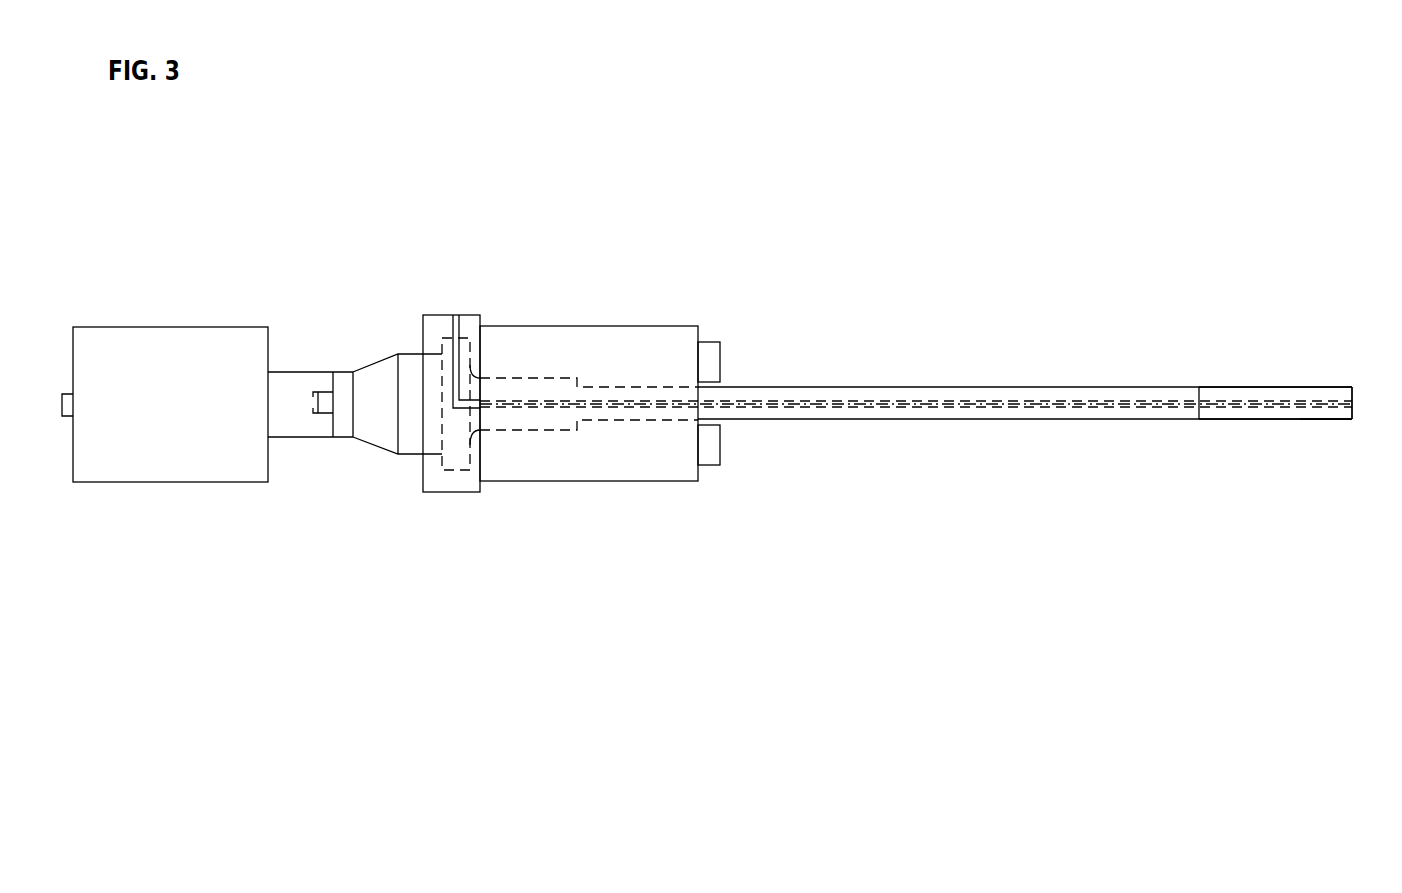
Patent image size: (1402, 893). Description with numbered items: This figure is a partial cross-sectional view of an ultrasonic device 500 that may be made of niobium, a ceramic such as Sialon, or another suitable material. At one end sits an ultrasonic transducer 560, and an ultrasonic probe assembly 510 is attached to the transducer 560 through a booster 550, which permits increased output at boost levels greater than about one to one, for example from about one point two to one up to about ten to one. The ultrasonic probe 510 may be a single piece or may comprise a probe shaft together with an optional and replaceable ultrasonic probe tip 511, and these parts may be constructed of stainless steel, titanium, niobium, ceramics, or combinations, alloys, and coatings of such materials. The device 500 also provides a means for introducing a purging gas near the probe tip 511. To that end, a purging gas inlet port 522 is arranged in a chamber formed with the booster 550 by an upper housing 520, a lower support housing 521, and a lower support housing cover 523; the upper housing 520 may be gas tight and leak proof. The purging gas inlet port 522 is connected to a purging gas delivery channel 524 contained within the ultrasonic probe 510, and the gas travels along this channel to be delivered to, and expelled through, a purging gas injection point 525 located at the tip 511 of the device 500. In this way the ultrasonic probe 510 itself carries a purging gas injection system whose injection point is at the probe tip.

The ultrasonic device 500 is at (770, 155).
The ultrasonic probe assembly 510 is at (918, 386).
The ultrasonic probe tip 511 is at (1305, 421).
The upper housing 520 is at (482, 494).
The lower support housing 521 is at (590, 483).
The purging gas inlet port 522 is at (458, 314).
The lower support housing cover 523 is at (721, 341).
The purging gas delivery channel 524 is at (983, 401).
The purging gas injection point 525 is at (1350, 384).
The booster 550 is at (355, 369).
The ultrasonic transducer 560 is at (173, 326).